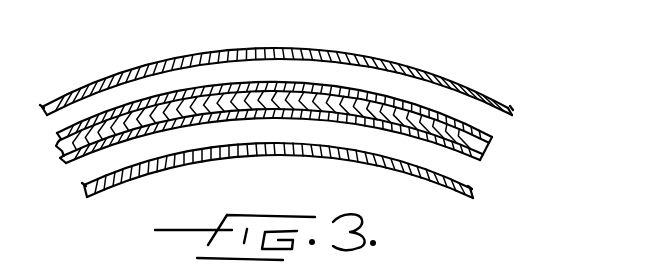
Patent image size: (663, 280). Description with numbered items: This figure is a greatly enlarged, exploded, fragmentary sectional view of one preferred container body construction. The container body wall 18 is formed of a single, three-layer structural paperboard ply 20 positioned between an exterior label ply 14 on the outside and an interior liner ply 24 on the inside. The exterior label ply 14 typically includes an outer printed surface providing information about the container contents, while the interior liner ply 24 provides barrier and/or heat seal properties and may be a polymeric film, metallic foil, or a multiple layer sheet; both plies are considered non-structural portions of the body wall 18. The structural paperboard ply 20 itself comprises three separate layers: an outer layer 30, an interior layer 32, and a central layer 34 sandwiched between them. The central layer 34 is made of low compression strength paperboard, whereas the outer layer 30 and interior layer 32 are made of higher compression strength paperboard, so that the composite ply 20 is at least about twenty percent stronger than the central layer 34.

The container body wall 18 is at (166, 44).
The exterior label ply 14 is at (450, 82).
The structural paperboard ply 20 is at (52, 128).
The outer layer 30 is at (492, 137).
The central layer 34 is at (488, 147).
The interior layer 32 is at (470, 160).
The interior liner ply 24 is at (430, 187).